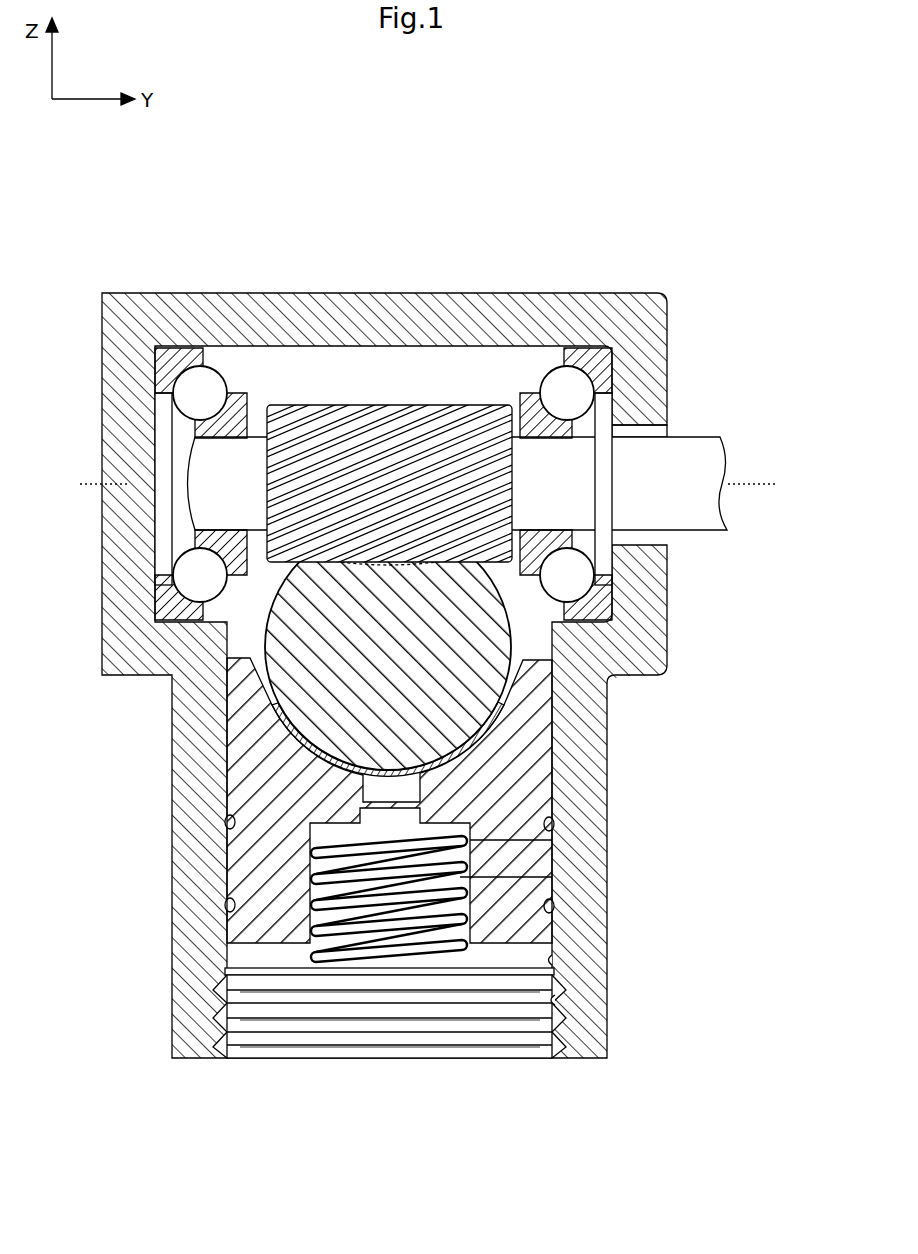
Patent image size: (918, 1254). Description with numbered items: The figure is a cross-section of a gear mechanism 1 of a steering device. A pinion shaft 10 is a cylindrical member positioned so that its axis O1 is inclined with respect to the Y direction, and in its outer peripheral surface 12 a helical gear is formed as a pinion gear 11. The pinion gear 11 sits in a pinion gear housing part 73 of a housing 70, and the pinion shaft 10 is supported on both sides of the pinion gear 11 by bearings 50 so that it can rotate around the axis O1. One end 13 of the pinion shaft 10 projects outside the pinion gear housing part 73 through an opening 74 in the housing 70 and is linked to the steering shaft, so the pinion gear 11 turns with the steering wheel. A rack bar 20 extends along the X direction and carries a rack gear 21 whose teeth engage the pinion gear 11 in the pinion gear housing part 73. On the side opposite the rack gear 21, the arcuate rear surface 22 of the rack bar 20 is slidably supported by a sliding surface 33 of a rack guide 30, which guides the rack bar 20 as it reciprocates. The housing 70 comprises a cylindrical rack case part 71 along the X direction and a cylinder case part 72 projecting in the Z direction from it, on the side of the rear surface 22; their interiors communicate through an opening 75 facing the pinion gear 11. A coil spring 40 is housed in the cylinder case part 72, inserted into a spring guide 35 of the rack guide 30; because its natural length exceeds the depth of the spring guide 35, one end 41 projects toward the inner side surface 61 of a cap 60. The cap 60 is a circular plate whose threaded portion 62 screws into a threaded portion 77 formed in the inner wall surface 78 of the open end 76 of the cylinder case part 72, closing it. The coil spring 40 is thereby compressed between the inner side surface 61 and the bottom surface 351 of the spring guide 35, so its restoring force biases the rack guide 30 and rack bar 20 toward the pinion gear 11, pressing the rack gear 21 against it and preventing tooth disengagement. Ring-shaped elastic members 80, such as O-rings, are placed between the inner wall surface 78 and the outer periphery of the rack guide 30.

The gear mechanism 1 is at (764, 115).
The pinion shaft 10 is at (705, 437).
The pinion gear 11 is at (448, 408).
The outer peripheral surface 12 is at (720, 464).
The one end 13 is at (727, 540).
The rack bar 20 is at (500, 614).
The rack gear 21 is at (290, 558).
The rear surface 22 is at (520, 690).
The rack guide 30 is at (257, 655).
The sliding surface 33 is at (530, 676).
The spring guide 35 is at (552, 877).
The bottom surface 351 is at (552, 840).
The coil spring 40 is at (452, 968).
The one end 41 is at (312, 962).
The bearings 50 is at (240, 388).
The cap 60 is at (312, 1060).
The inner side surface 61 is at (240, 962).
The threaded portion 62 is at (575, 1036).
The housing 70 is at (607, 770).
The rack case part 71 is at (58, 1060).
The cylinder case part 72 is at (337, 866).
The pinion gear housing part 73 is at (383, 368).
The opening 74 is at (672, 428).
The opening 75 is at (530, 634).
The open end 76 is at (538, 1068).
The threaded portion 77 is at (562, 998).
The inner wall surface 78 is at (550, 958).
The ring-shaped elastic members 80 is at (556, 824).
The axis O1 is at (447, 485).